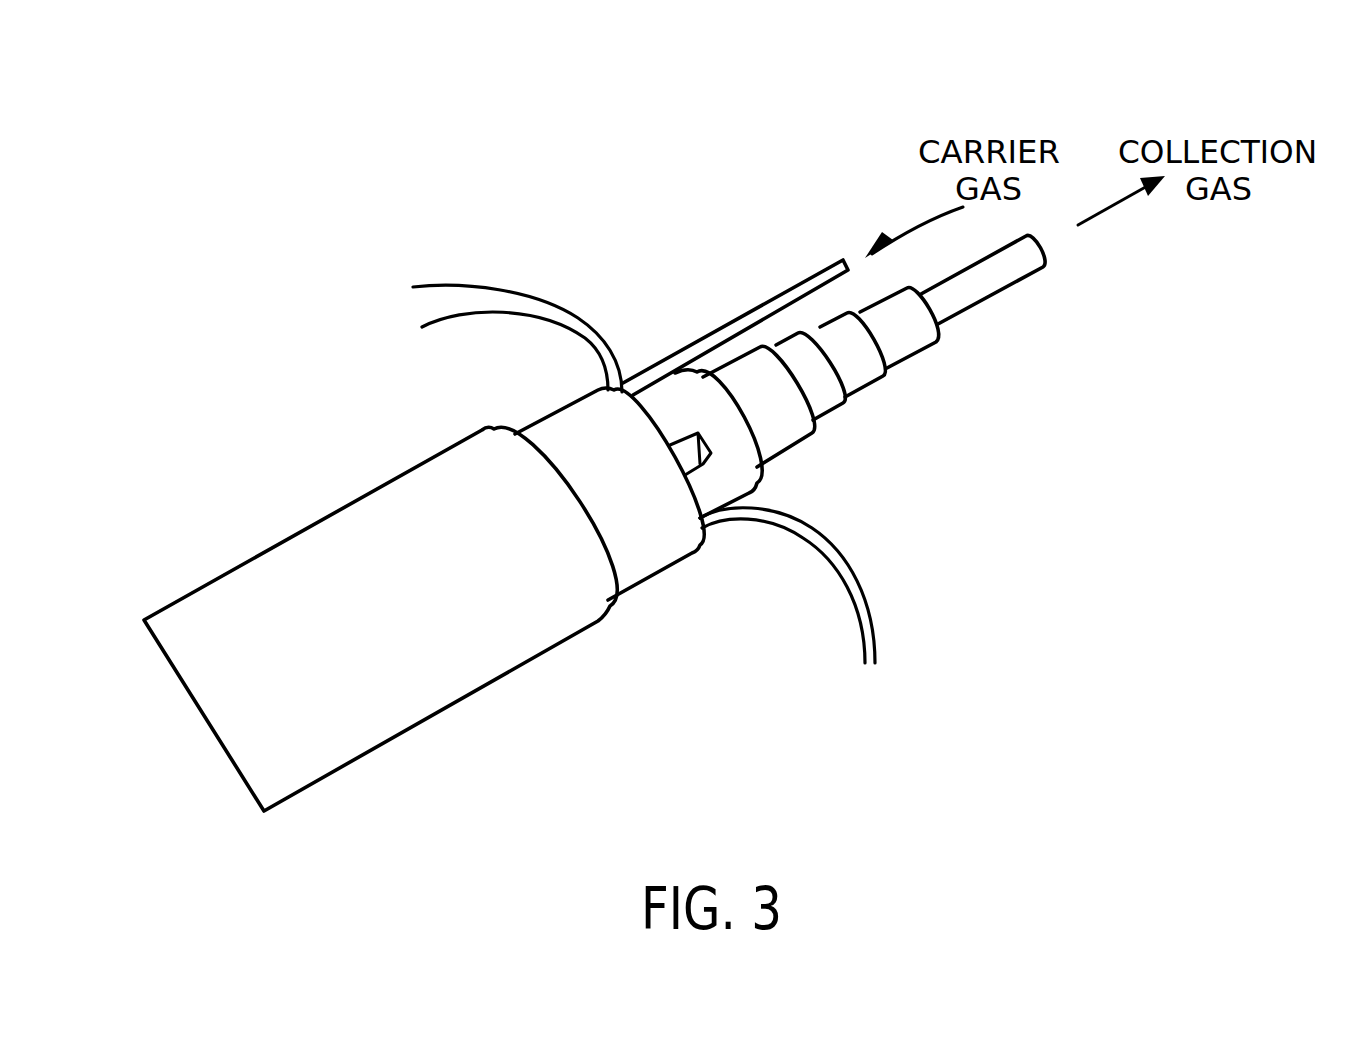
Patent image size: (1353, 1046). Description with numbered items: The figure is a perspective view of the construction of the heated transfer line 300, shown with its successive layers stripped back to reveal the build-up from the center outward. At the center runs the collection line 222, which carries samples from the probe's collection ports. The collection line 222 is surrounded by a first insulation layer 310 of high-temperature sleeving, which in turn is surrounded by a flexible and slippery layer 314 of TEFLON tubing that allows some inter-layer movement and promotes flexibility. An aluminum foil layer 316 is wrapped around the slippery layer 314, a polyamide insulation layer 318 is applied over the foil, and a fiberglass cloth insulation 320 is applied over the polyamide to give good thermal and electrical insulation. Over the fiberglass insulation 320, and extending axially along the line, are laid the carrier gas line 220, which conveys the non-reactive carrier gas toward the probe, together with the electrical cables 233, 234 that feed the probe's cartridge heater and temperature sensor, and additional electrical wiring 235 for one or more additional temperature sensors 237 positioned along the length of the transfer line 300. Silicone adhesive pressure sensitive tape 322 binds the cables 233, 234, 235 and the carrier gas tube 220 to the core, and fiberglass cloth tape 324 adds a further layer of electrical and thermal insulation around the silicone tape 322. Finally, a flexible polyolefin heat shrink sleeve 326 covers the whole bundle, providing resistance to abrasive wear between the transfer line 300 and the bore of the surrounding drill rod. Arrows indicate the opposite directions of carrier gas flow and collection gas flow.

The heated transfer line 300 is at (836, 96).
The carrier gas line 220 is at (733, 317).
The collection line 222 is at (1030, 280).
The electrical cable 233 is at (482, 312).
The electrical cable 234 is at (478, 285).
The additional electrical wiring 235 is at (877, 638).
The additional temperature sensor 237 is at (710, 453).
The first insulation layer 310 is at (937, 342).
The flexible and slippery layer 314 is at (880, 382).
The aluminum foil layer 316 is at (843, 408).
The polyamide insulation layer 318 is at (812, 437).
The fiberglass cloth insulation 320 is at (757, 480).
The silicone adhesive pressure sensitive tape 322 is at (705, 487).
The fiberglass cloth tape 324 is at (655, 573).
The polyolefin heat shrink sleeve 326 is at (497, 676).